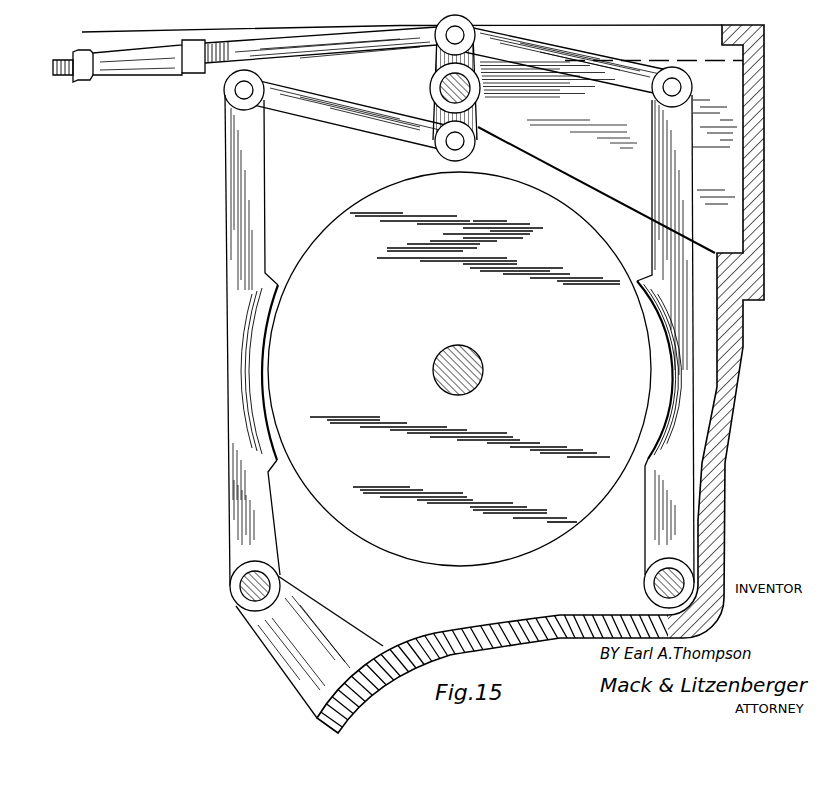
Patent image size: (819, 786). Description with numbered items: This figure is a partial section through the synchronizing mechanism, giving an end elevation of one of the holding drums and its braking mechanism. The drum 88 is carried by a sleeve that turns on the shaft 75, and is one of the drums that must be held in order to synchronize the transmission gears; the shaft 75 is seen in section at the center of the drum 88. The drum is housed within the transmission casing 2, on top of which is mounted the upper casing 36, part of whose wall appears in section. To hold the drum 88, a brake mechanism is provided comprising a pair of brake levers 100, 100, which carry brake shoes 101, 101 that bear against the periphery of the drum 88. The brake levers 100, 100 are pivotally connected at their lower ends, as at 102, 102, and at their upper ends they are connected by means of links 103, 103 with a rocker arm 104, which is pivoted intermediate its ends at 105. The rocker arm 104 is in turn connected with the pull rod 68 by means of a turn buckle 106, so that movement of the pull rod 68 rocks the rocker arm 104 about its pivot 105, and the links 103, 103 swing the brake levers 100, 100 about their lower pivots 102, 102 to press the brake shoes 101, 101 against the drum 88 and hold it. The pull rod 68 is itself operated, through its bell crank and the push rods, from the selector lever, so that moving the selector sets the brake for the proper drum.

The transmission casing 2 is at (734, 439).
The upper casing 36 is at (753, 163).
The pull rod 68 is at (330, 45).
The shaft 75 is at (477, 374).
The drum 88 is at (347, 211).
The brake levers 100 is at (243, 205).
The brake shoes 101 is at (250, 353).
The pivotal connections 102 is at (245, 578).
The links 103 is at (365, 133).
The rocker arm 104 is at (478, 117).
The pivot 105 is at (438, 88).
The turn buckle 106 is at (118, 72).